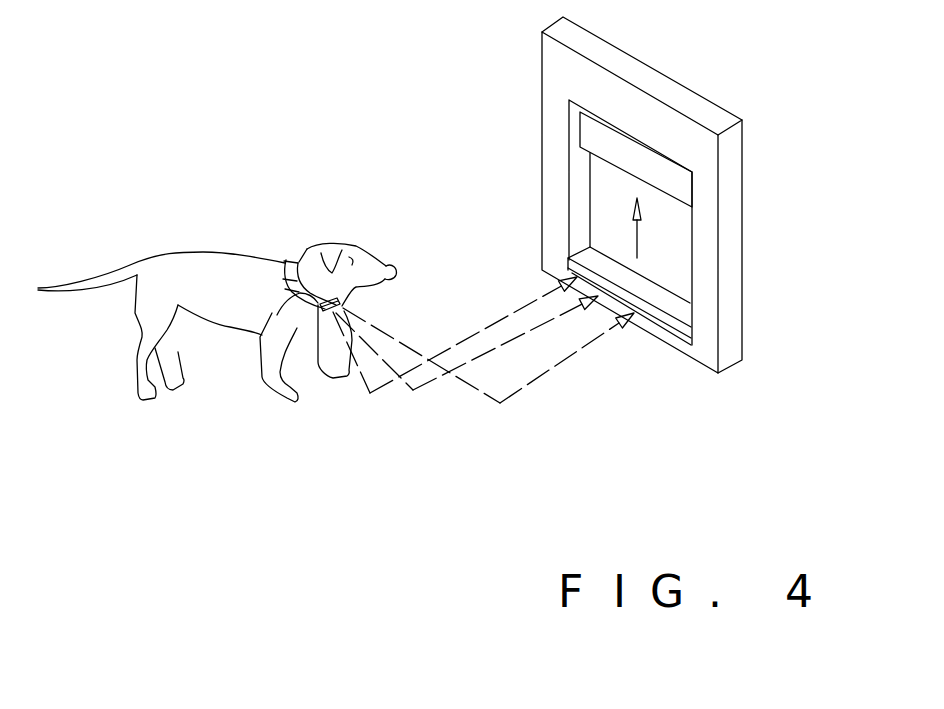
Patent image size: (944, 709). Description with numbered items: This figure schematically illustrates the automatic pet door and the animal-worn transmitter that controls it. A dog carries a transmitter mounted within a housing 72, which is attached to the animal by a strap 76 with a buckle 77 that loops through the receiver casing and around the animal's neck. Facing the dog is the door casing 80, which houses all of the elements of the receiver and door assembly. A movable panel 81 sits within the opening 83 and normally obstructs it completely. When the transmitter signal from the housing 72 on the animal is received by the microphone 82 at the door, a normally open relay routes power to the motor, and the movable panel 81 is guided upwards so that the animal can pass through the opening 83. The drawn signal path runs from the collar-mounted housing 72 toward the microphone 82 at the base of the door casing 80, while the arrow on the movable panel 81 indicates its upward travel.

The housing 72 is at (348, 378).
The strap 76 is at (262, 378).
The buckle 77 is at (308, 246).
The door casing 80 is at (673, 83).
The movable panel 81 is at (669, 182).
The microphone 82 is at (661, 330).
The opening 83 is at (673, 245).